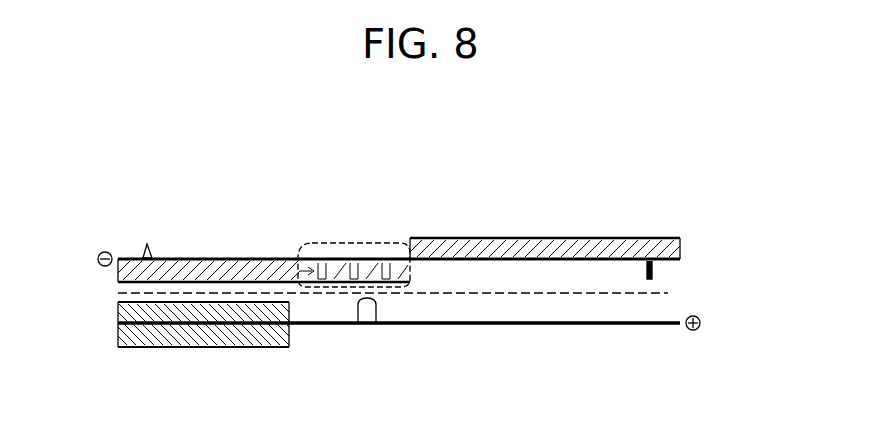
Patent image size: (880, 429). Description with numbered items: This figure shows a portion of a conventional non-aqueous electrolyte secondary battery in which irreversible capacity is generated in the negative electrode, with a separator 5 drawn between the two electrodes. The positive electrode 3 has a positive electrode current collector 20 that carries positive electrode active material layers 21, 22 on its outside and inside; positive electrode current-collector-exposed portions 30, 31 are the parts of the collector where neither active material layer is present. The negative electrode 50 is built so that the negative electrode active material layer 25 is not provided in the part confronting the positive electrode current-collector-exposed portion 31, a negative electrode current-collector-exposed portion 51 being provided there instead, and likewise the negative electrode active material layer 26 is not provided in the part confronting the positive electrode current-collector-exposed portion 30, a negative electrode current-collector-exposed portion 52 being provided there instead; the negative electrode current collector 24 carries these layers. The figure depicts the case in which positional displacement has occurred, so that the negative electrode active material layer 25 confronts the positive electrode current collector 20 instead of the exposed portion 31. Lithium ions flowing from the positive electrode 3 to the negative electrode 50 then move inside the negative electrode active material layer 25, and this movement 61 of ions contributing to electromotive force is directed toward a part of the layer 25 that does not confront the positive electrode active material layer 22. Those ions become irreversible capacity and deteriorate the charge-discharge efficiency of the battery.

The positive electrode 3 is at (348, 339).
The separator 5 is at (668, 293).
The positive electrode current collector 20 is at (118, 323).
The positive electrode active material layer 21 is at (169, 344).
The positive electrode active material layer 22 is at (118, 311).
The current collector 24 is at (680, 259).
The negative electrode active material layer 25 is at (207, 258).
The negative electrode active material layer 26 is at (670, 237).
The positive electrode current-collector-exposed portion 30 is at (424, 326).
The positive electrode current-collector-exposed portion 31 is at (358, 326).
The negative electrode 50 is at (464, 240).
The negative electrode current-collector-exposed portion 51 is at (703, 269).
The negative electrode current-collector-exposed portion 52 is at (147, 258).
The movement of ions 61 is at (340, 242).